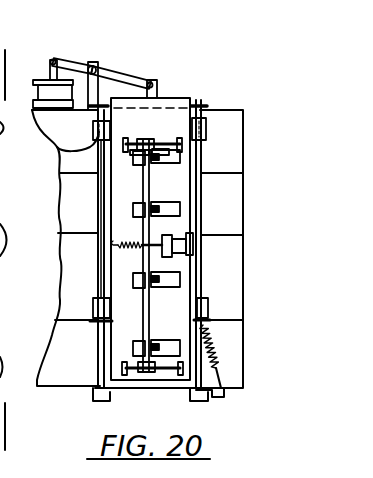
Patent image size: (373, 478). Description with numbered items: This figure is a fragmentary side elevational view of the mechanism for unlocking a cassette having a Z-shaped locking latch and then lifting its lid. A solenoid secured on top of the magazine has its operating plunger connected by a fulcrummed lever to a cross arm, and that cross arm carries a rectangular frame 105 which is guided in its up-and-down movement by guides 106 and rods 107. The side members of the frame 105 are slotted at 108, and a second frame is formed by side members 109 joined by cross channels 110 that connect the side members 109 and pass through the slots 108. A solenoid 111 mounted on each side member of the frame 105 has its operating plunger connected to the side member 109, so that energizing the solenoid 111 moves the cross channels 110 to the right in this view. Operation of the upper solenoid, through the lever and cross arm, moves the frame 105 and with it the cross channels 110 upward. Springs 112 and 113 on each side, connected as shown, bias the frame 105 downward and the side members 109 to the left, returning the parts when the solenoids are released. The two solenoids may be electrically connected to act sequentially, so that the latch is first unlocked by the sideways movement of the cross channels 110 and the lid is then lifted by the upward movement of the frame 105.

The rectangular frame 105 is at (180, 97).
The guides 106 is at (207, 129).
The rods 107 is at (99, 283).
The slots 108 is at (180, 207).
The side members 109 is at (108, 222).
The cross channels 110 is at (156, 163).
The solenoid 111 is at (195, 245).
The spring 112 is at (213, 360).
The spring 113 is at (113, 244).